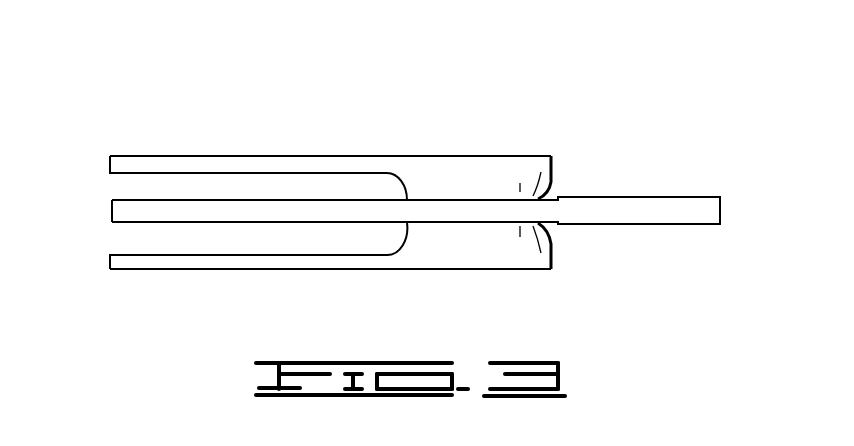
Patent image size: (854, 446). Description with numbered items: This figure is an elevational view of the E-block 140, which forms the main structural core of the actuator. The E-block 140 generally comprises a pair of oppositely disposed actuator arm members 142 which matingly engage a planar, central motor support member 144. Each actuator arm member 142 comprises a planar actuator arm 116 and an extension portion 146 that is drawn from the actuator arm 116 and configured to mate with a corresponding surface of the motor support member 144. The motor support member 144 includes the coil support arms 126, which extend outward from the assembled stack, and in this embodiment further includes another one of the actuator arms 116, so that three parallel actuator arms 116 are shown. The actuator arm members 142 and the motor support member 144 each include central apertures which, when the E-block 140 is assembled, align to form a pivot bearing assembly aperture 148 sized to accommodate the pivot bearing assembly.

The E-block 140 is at (236, 78).
The actuator arm 116 is at (188, 163).
The extension portion 146 is at (425, 178).
The actuator arm member 142 is at (432, 156).
The pivot bearing assembly aperture 148 is at (497, 156).
The motor support member 144 is at (590, 197).
The coil support arm 126 is at (690, 197).